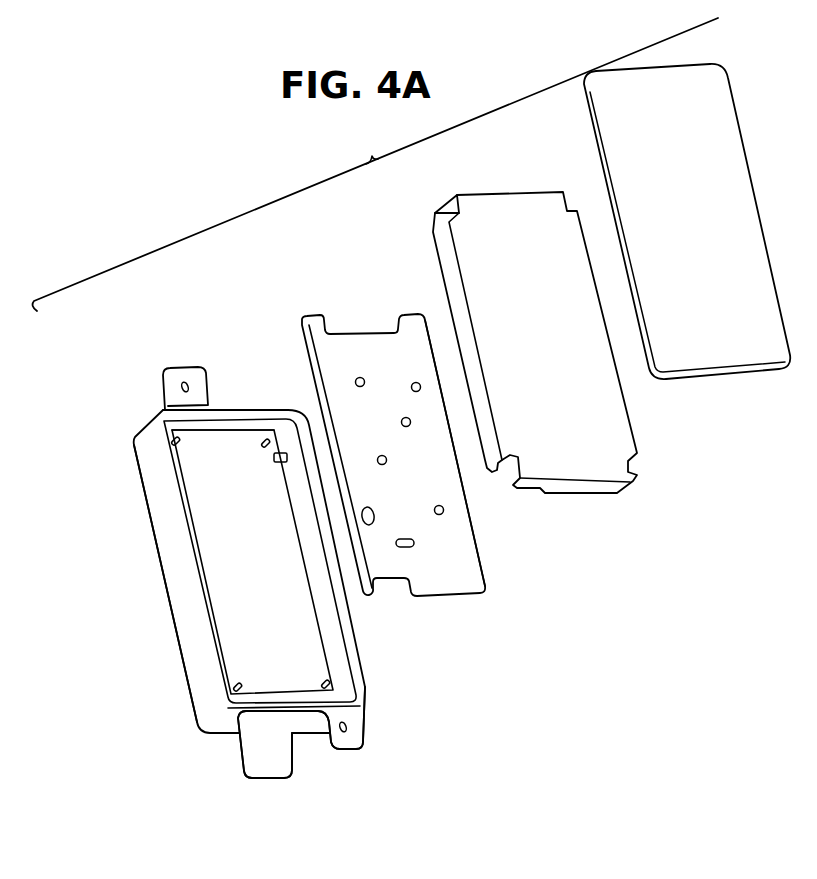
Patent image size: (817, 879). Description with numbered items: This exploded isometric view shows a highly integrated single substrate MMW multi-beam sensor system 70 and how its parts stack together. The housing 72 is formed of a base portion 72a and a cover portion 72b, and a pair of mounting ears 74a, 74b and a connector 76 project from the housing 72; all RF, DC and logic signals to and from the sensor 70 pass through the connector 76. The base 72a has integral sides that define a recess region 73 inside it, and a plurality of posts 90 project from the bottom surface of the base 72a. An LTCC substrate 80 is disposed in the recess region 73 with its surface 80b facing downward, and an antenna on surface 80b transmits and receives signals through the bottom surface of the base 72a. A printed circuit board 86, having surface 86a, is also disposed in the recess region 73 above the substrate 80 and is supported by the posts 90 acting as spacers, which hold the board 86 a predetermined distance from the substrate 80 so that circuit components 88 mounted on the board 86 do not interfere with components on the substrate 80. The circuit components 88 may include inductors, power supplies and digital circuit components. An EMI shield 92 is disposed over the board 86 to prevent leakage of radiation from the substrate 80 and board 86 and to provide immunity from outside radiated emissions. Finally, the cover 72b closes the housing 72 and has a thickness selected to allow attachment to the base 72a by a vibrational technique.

The MMW multi-beam sensor system 70 is at (375, 164).
The housing 72 is at (160, 648).
The base portion 72a is at (168, 596).
The cover portion 72b is at (704, 220).
The recess region 73 is at (216, 564).
The mounting ear 74a is at (180, 367).
The mounting ear 74b is at (366, 737).
The connector 76 is at (297, 769).
The LTCC substrate 80 is at (302, 610).
The second surface of LTCC substrate 80b is at (282, 570).
The printed circuit board 86 is at (478, 552).
The first surface of printed circuit board 86a is at (424, 581).
The circuit components 88 is at (382, 455).
The posts 90 is at (178, 441).
The EMI shield 92 is at (613, 413).